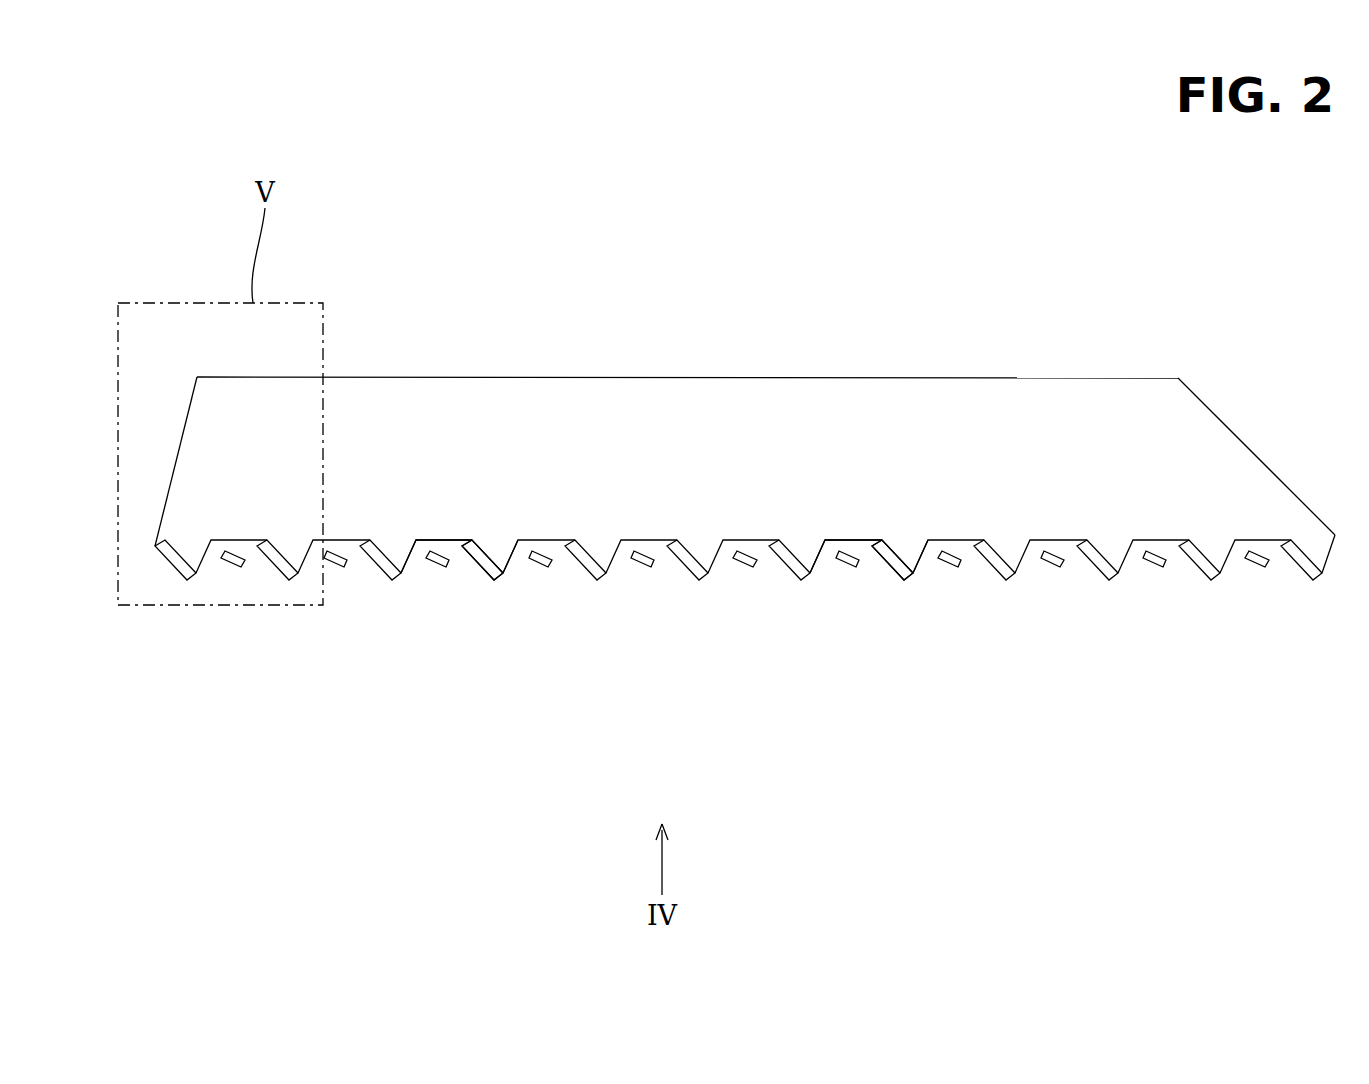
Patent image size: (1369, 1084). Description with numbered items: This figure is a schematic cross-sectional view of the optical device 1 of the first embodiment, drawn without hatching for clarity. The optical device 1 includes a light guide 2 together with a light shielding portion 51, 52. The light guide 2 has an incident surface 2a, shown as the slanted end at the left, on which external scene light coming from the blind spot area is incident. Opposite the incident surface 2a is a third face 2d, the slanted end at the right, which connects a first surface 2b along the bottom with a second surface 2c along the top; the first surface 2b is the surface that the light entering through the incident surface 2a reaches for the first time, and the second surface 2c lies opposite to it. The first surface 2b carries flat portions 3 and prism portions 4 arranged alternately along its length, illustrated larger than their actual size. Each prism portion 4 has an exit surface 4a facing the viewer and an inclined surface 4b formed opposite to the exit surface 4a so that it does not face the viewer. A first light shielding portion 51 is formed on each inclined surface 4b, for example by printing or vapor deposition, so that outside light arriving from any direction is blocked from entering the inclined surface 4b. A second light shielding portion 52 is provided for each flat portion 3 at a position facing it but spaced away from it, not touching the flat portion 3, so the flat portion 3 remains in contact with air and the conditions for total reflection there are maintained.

The optical device 1 is at (990, 226).
The light guide 2 is at (465, 415).
The incident surface 2a is at (181, 446).
The first surface 2b is at (1335, 580).
The second surface 2c is at (627, 377).
The third face 2d is at (1250, 448).
The flat portion 3 is at (418, 544).
The prism portion 4 is at (458, 665).
The exit surface 4a is at (510, 563).
The inclined surface 4b is at (482, 573).
The first light shielding portion 51 is at (285, 583).
The second light shielding portion 52 is at (229, 571).